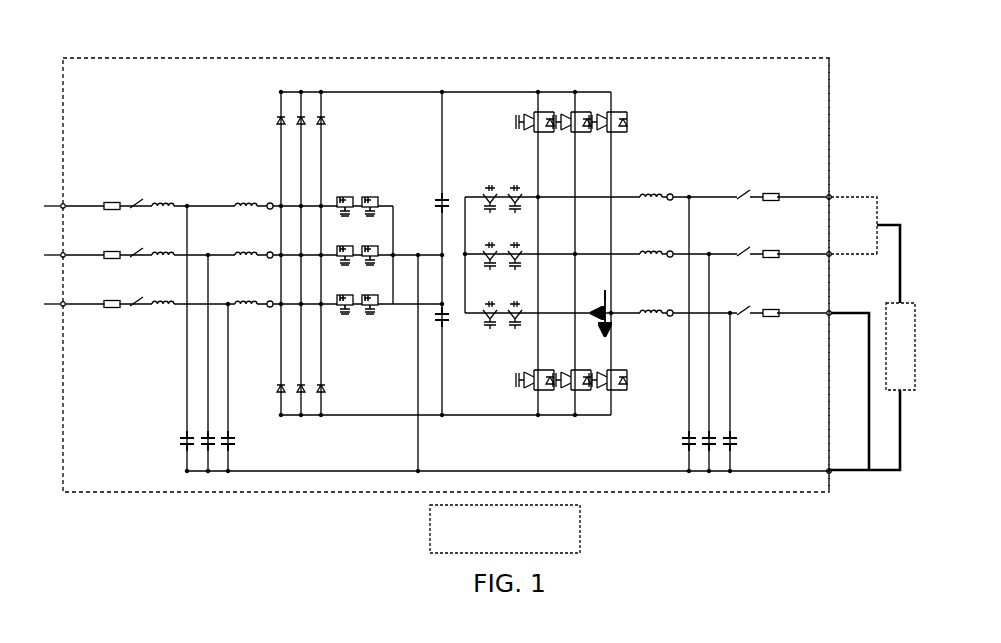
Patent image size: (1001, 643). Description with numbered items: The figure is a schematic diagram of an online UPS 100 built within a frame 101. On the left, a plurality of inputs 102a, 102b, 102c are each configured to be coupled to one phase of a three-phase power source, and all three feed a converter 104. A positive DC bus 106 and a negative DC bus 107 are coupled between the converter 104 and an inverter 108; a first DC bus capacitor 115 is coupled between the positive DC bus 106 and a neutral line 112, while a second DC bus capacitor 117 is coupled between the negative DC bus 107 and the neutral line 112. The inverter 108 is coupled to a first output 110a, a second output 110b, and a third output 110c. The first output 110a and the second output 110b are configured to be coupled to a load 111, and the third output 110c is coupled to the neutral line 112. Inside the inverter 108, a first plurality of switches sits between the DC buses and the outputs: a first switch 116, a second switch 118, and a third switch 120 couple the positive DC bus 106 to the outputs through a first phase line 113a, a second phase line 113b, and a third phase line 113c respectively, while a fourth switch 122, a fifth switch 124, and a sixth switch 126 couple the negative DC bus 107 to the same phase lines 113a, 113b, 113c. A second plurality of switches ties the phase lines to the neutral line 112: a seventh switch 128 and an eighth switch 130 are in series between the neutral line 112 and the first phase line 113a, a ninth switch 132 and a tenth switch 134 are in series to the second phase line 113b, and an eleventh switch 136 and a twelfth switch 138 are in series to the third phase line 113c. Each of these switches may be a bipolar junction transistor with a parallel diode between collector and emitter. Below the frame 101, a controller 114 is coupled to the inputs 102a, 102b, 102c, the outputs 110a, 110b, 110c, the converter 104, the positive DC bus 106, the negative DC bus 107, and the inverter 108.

The online UPS 100 is at (148, 43).
The frame 101 is at (829, 118).
The first input 102a is at (62, 205).
The second input 102b is at (62, 254).
The third input 102c is at (62, 303).
The converter 104 is at (268, 124).
The positive DC bus 106 is at (491, 95).
The negative DC bus 107 is at (478, 415).
The inverter 108 is at (583, 253).
The first output 110a is at (832, 196).
The second output 110b is at (832, 254).
The third output 110c is at (832, 312).
The load 111 is at (905, 391).
The neutral line 112 is at (612, 471).
The first phase line 113a is at (695, 197).
The second phase line 113b is at (699, 254).
The third phase line 113c is at (730, 313).
The controller 114 is at (580, 527).
The first DC bus capacitor 115 is at (440, 198).
The first switch 116 is at (531, 132).
The second DC bus capacitor 117 is at (440, 312).
The second switch 118 is at (568, 132).
The third switch 120 is at (604, 132).
The fourth switch 122 is at (530, 376).
The fifth switch 124 is at (568, 371).
The sixth switch 126 is at (605, 371).
The seventh switch 128 is at (494, 221).
The eighth switch 130 is at (515, 213).
The ninth switch 132 is at (494, 278).
The tenth switch 134 is at (515, 270).
The eleventh switch 136 is at (494, 337).
The twelfth switch 138 is at (515, 329).